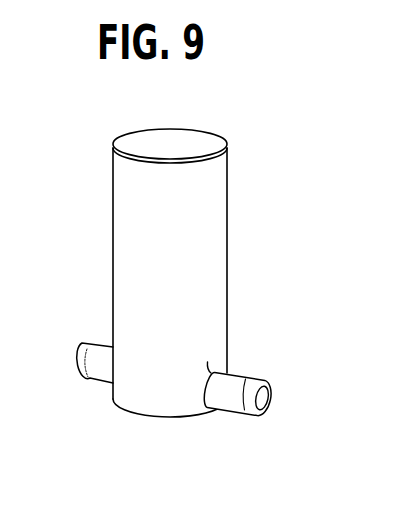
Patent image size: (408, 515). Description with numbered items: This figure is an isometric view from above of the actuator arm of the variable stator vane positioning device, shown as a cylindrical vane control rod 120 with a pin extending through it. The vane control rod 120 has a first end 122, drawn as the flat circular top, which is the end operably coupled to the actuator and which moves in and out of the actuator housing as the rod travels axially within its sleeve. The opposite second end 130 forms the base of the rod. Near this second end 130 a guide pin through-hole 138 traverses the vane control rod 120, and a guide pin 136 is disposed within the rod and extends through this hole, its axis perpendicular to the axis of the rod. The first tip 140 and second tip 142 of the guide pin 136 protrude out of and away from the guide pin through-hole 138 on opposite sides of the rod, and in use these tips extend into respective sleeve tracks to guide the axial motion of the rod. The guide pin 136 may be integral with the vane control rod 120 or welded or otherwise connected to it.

The vane control rod 120 is at (187, 288).
The first end 122 is at (193, 140).
The second end 130 is at (190, 418).
The guide pin 136 is at (246, 375).
The guide pin through-hole 138 is at (208, 362).
The first tip 140 is at (78, 357).
The second tip 142 is at (267, 387).